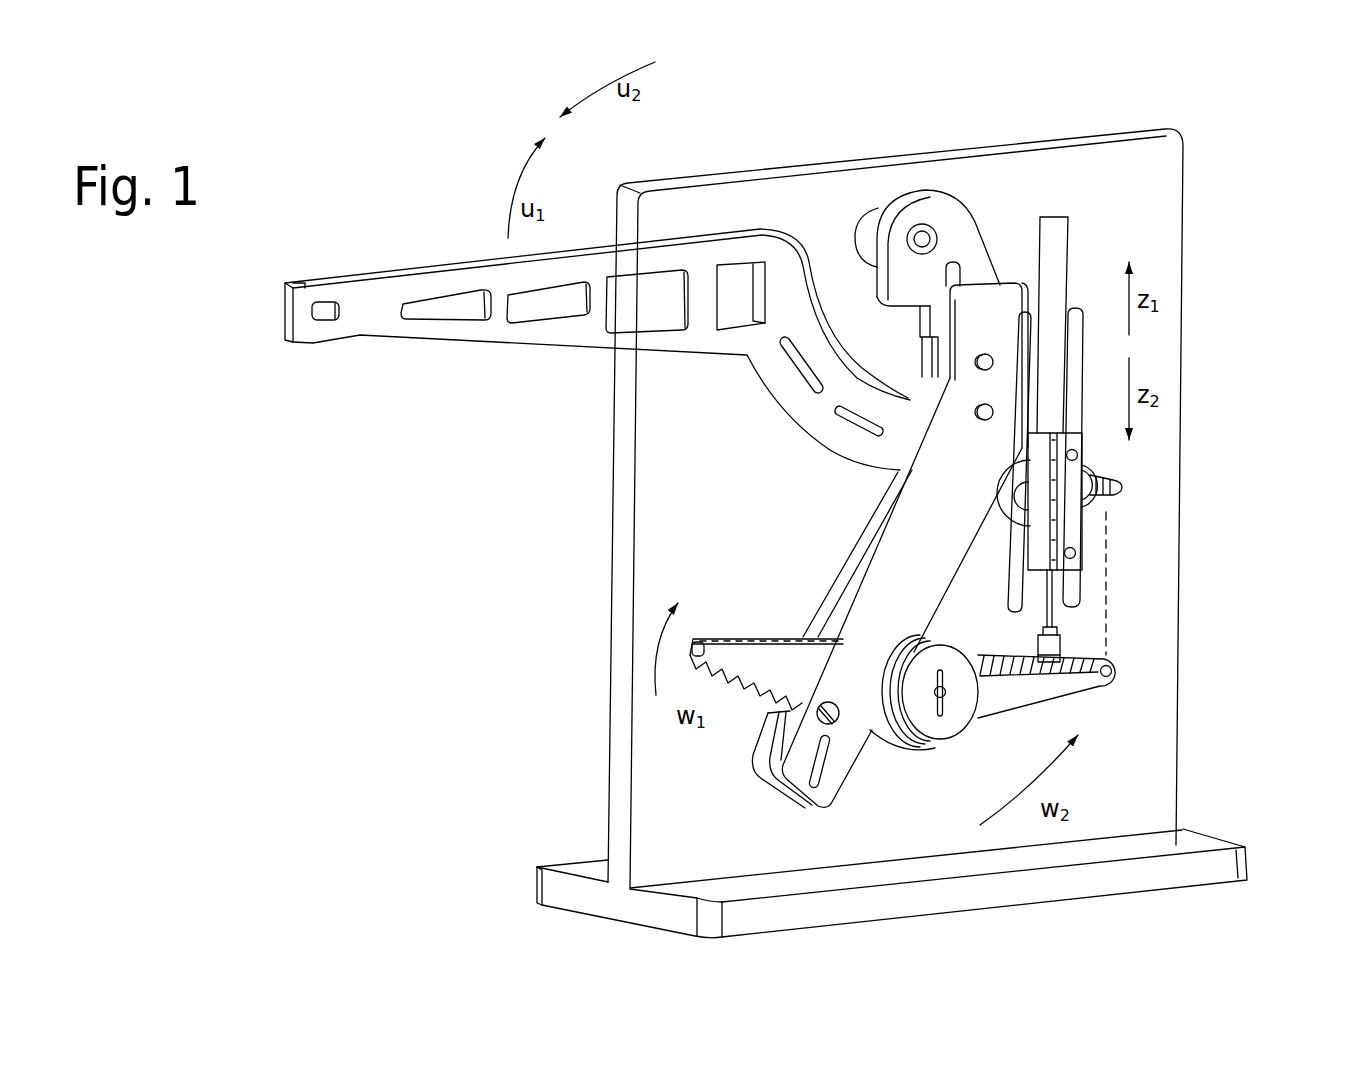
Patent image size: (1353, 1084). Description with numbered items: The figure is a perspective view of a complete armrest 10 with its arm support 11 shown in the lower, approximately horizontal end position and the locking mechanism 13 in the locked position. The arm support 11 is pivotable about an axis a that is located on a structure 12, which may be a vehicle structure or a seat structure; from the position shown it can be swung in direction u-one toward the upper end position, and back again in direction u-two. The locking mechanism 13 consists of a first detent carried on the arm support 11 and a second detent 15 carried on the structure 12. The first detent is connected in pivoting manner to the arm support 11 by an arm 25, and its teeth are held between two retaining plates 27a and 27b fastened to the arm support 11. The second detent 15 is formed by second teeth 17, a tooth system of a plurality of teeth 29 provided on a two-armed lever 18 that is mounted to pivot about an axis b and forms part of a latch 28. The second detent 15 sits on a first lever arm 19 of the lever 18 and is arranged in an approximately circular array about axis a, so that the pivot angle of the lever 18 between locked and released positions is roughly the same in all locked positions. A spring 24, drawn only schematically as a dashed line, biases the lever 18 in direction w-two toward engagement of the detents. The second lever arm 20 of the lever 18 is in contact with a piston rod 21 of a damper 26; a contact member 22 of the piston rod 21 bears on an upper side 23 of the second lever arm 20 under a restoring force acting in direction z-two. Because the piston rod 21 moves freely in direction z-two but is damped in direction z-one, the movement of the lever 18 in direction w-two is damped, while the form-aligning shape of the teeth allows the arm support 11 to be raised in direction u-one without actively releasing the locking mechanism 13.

The armrest 10 is at (1254, 170).
The arm support 11 is at (425, 292).
The structure 12 is at (1160, 470).
The locking mechanism 13 is at (785, 608).
The second detent 15 is at (717, 695).
The second teeth 17 is at (740, 710).
The two-armed lever 18 is at (940, 762).
The first lever arm 19 is at (768, 663).
The second lever arm 20 is at (1108, 688).
The piston rod 21 is at (1042, 607).
The contact member 22 is at (1060, 645).
The upper side 23 is at (1072, 650).
The spring 24 is at (1107, 550).
The arm 25 is at (903, 528).
The damper 26 is at (1058, 253).
The retaining plate 27a is at (873, 500).
The retaining plate 27b is at (995, 312).
The latch 28 is at (895, 758).
The teeth 29 is at (770, 708).
The axis a is at (922, 237).
The axis b is at (943, 699).